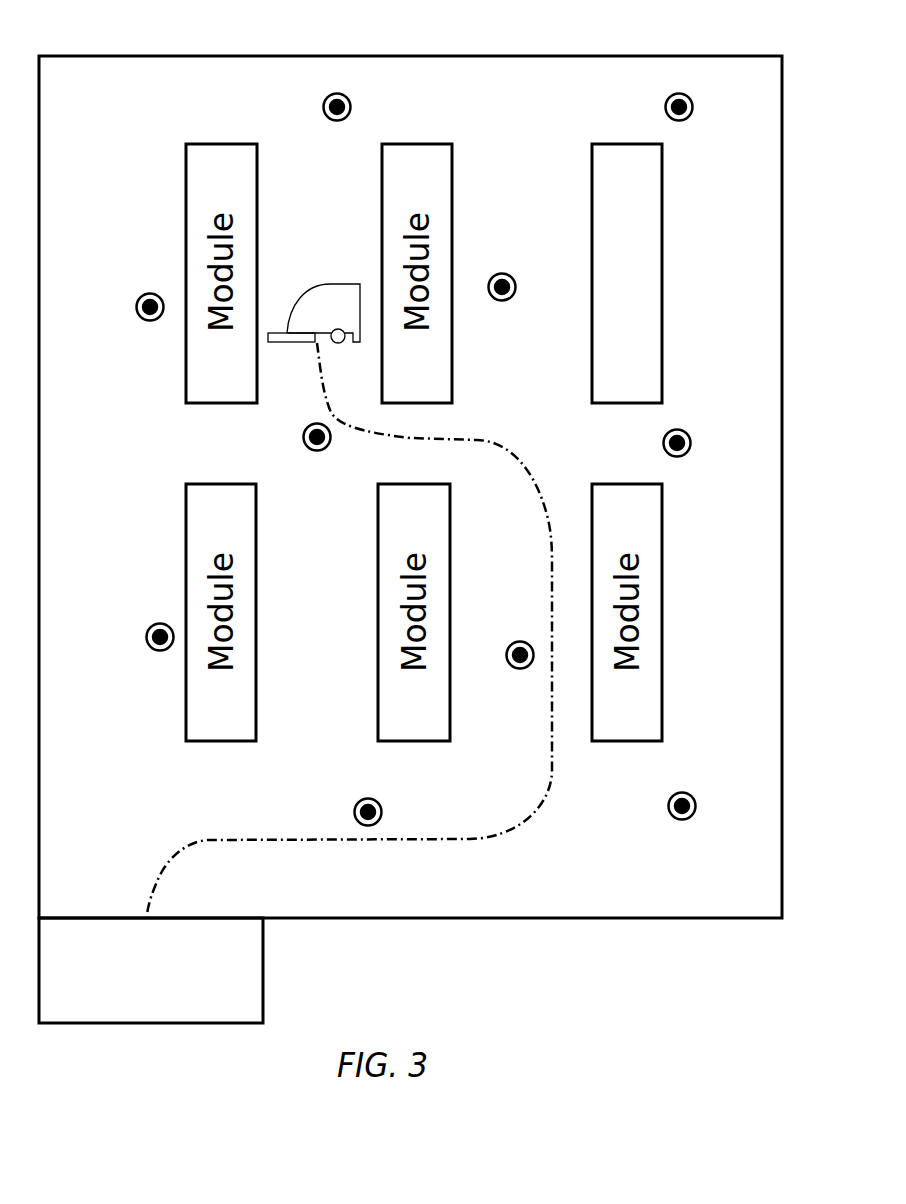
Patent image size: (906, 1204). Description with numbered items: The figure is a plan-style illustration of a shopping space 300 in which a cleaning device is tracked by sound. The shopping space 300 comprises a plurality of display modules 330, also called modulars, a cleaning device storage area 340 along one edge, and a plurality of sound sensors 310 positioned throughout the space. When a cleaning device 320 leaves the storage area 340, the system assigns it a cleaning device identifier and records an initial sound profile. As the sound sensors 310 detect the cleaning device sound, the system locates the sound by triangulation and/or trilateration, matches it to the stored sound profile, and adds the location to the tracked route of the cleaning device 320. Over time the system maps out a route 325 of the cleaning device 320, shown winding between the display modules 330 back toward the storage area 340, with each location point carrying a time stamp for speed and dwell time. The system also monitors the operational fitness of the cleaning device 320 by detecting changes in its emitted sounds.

The shopping space 300 is at (673, 53).
The sound sensors 310 is at (693, 100).
The cleaning device 320 is at (314, 276).
The route 325 is at (482, 430).
The display modules 330 is at (663, 255).
The cleaning device storage area 340 is at (151, 970).